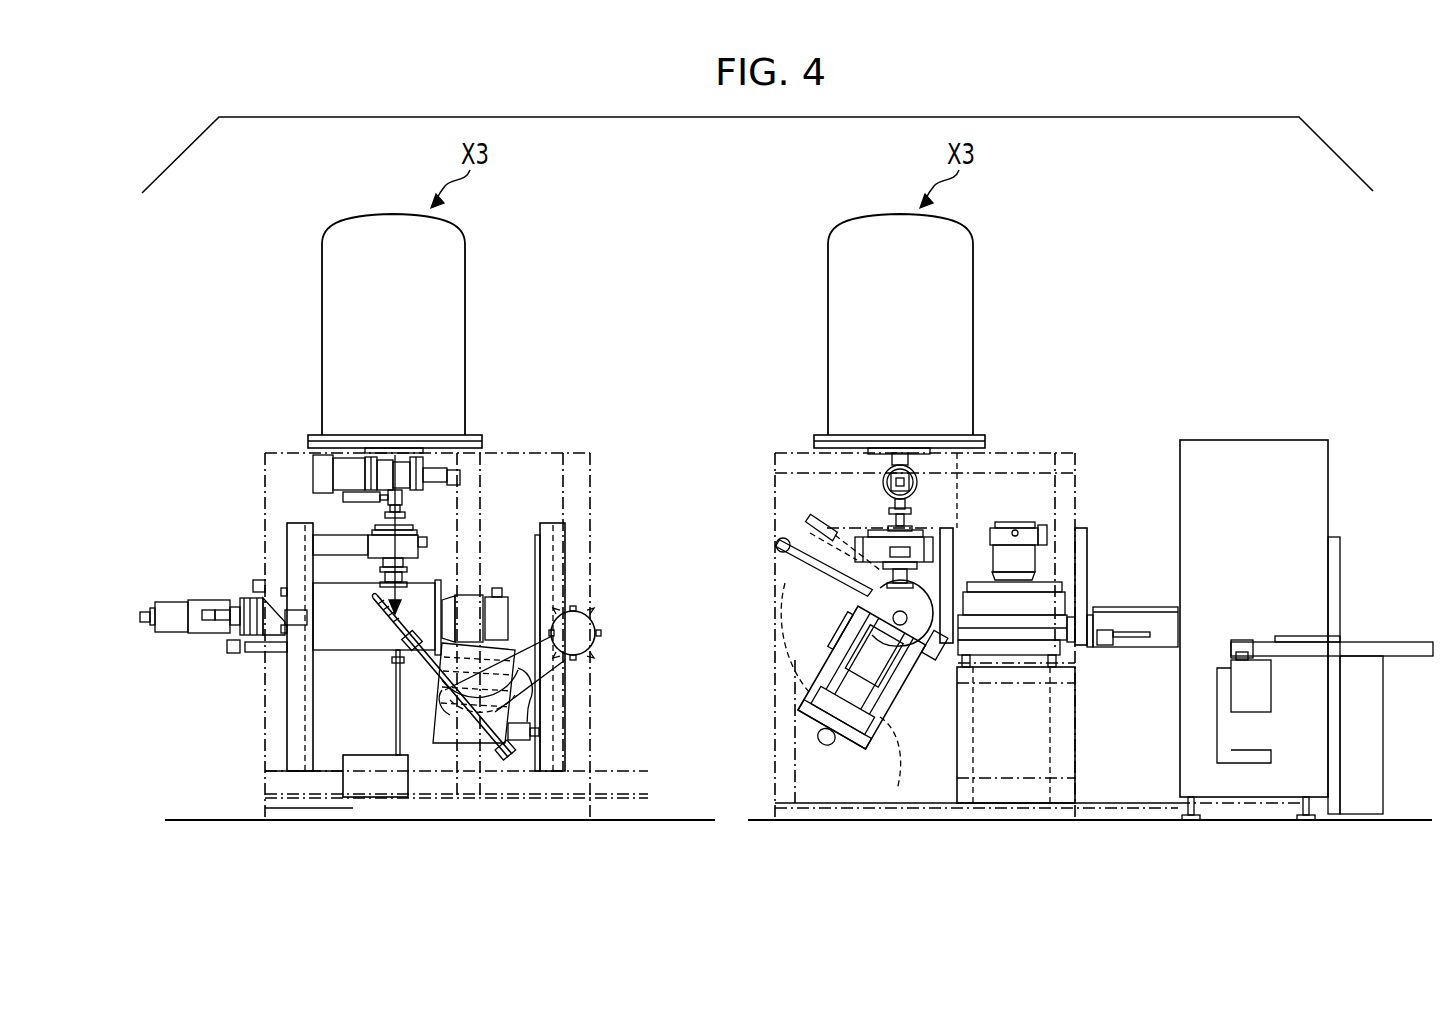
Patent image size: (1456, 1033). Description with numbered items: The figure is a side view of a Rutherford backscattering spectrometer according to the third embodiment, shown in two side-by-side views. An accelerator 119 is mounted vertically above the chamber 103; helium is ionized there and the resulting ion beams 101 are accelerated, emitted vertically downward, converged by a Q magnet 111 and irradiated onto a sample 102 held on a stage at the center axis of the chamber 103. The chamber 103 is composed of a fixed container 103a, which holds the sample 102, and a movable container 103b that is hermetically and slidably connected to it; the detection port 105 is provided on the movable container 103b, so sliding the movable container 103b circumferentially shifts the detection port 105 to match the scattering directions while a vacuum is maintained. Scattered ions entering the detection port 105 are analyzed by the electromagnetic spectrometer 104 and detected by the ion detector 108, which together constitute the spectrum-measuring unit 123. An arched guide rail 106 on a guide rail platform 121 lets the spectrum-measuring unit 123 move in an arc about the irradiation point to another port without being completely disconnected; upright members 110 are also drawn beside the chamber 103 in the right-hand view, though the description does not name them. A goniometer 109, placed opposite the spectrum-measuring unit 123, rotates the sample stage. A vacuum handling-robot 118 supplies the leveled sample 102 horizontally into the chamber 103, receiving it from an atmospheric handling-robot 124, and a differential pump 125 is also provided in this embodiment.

The ion beams 101 is at (370, 549).
The sample 102 is at (377, 616).
The chamber 103 is at (950, 572).
The fixed container 103a is at (363, 650).
The movable container 103b is at (427, 583).
The electromagnetic spectrometer 104 is at (880, 718).
The detection port 105 is at (397, 652).
The guide rail 106 is at (565, 565).
The ion detector 108 is at (598, 640).
The goniometer 109 is at (195, 602).
The column 110 is at (948, 528).
The Q magnet 111 is at (418, 527).
The vacuum handling-robot 118 is at (1017, 492).
The accelerator 119 is at (465, 250).
The guide rail platform 121 is at (565, 718).
The spectrum-measuring unit 123 is at (420, 728).
The atmospheric handling-robot 124 is at (1272, 410).
The differential pump 125 is at (372, 785).